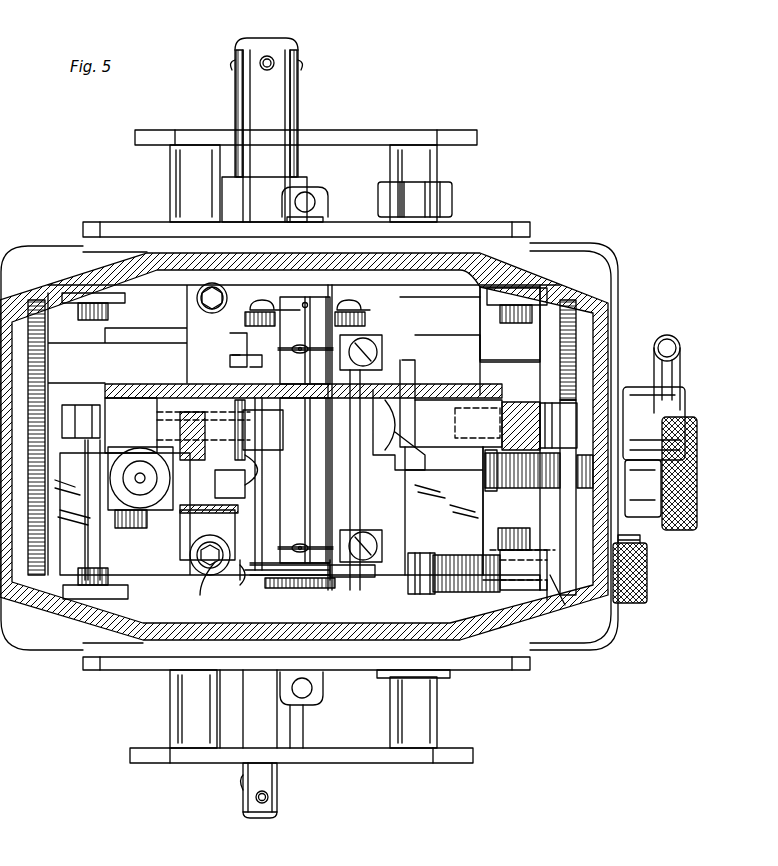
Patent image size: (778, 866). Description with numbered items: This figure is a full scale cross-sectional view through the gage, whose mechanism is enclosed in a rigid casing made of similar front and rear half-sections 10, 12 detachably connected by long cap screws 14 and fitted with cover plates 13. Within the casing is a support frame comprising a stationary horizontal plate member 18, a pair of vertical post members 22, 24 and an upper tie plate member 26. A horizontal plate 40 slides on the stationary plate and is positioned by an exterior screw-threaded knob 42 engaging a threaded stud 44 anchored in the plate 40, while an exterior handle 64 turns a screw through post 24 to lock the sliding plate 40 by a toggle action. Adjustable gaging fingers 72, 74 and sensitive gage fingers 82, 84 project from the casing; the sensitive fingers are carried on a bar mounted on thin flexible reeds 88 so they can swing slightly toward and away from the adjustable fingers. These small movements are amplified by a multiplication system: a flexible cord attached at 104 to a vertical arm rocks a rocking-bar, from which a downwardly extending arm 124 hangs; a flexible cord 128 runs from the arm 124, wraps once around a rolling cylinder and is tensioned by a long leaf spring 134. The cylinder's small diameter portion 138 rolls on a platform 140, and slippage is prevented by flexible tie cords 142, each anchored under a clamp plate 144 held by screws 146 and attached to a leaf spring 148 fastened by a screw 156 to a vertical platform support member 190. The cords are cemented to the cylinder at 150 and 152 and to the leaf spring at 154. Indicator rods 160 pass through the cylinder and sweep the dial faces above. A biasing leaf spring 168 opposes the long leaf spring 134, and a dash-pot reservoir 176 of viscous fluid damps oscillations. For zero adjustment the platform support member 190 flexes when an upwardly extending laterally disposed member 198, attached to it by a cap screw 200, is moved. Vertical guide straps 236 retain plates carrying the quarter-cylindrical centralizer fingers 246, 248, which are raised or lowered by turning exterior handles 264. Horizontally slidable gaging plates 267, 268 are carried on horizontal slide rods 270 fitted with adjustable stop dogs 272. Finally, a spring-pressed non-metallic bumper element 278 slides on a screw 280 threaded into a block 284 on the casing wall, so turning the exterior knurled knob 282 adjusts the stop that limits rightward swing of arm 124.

The front casing half-section 10 is at (590, 650).
The rear casing half-section 12 is at (35, 246).
The cover plates 13 is at (478, 224).
The long cap screws 14 is at (45, 322).
The stationary horizontal plate member 18 is at (480, 325).
The vertical post member 22 is at (135, 384).
The vertical post member 24 is at (472, 384).
The upper tie plate member 26 is at (510, 374).
The horizontal slidable plate 40 is at (483, 530).
The exterior screw-threaded knob 42 is at (680, 530).
The threaded stud 44 is at (540, 488).
The exterior handle 64 is at (675, 348).
The adjustable gaging finger 72 is at (278, 785).
The adjustable gaging finger 74 is at (296, 92).
The sensitive gage finger 82 is at (243, 785).
The sensitive gage finger 84 is at (235, 85).
The flexible reeds 88 is at (197, 303).
The cord connection point 104 is at (205, 570).
The downwardly extending arm 124 is at (405, 555).
The flexible cord 128 is at (338, 585).
The long leaf spring 134 is at (100, 525).
The small diameter portion of cylinder 138 is at (328, 495).
The platform 140 is at (345, 525).
The flexible tie cords 142 is at (292, 346).
The clamp plate 144 is at (368, 336).
The screws 146 is at (375, 350).
The leaf spring 148 is at (232, 364).
The cementing 150 is at (292, 351).
The cementing 152 is at (290, 588).
The cementing 154 is at (232, 350).
The screw 156 is at (262, 462).
The indicator rod 160 is at (305, 302).
The biasing leaf spring 168 is at (86, 478).
The reservoir 176 is at (148, 455).
The vertical platform support member 190 is at (228, 470).
The upwardly extending laterally disposed member 198 is at (190, 409).
The cap screw 200 is at (283, 435).
The guide straps 236 is at (125, 298).
The centralizer finger 246 is at (255, 818).
The centralizer finger 248 is at (258, 42).
The exterior handles 264 is at (312, 195).
The horizontally slidable gaging plate 267 is at (355, 763).
The horizontally slidable gaging plate 268 is at (458, 130).
The horizontal slide rods 270 is at (170, 180).
The adjustable stop dogs 272 is at (452, 190).
The bumper element 278 is at (440, 592).
The screw 280 is at (548, 550).
The exterior knurled knob 282 is at (635, 605).
The block 284 is at (538, 578).